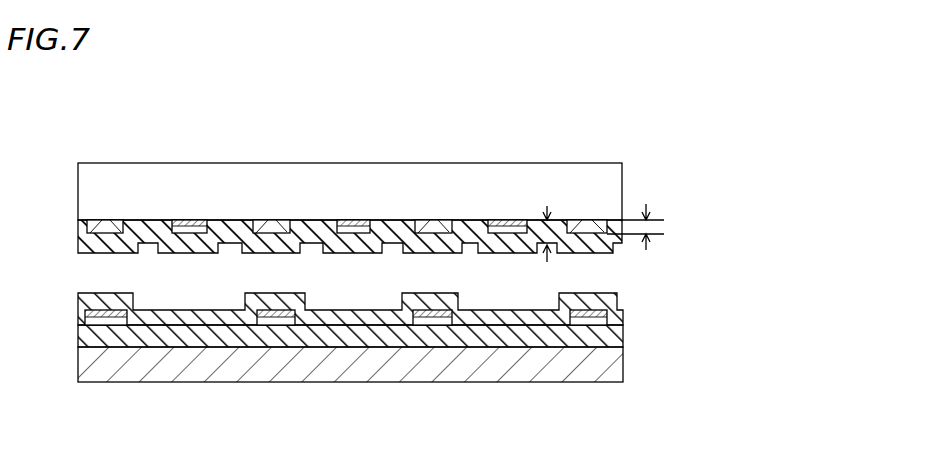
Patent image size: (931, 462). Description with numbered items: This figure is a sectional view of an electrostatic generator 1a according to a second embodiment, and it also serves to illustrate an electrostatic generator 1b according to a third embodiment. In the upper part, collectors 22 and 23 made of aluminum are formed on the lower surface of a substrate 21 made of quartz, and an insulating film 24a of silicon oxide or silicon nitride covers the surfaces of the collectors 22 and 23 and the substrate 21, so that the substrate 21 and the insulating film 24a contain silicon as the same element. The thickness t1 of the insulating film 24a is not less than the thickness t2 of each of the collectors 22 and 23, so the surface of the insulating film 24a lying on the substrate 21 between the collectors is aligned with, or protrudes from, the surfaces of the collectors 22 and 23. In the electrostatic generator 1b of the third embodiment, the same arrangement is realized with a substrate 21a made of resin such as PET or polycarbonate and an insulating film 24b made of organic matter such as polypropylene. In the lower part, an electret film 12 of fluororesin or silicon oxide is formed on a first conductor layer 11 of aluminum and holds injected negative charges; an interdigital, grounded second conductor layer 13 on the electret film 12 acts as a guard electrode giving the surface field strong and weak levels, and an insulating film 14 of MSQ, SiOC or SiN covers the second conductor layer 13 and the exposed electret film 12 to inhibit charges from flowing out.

The electrostatic generator 1a is at (395, 235).
The electrostatic generator 1b is at (622, 106).
The first conductor layer 11 is at (514, 364).
The electret film 12 is at (353, 349).
The second conductor layer 13 is at (103, 326).
The insulating film 14 is at (200, 318).
The substrate 21 is at (350, 133).
The substrate 21a is at (457, 180).
The collector 22 is at (107, 220).
The collector 23 is at (190, 221).
The insulating film 24a is at (350, 258).
The insulating film 24b is at (358, 254).
The thickness of the insulating film t1 is at (536, 244).
The thickness of the collectors t2 is at (646, 227).